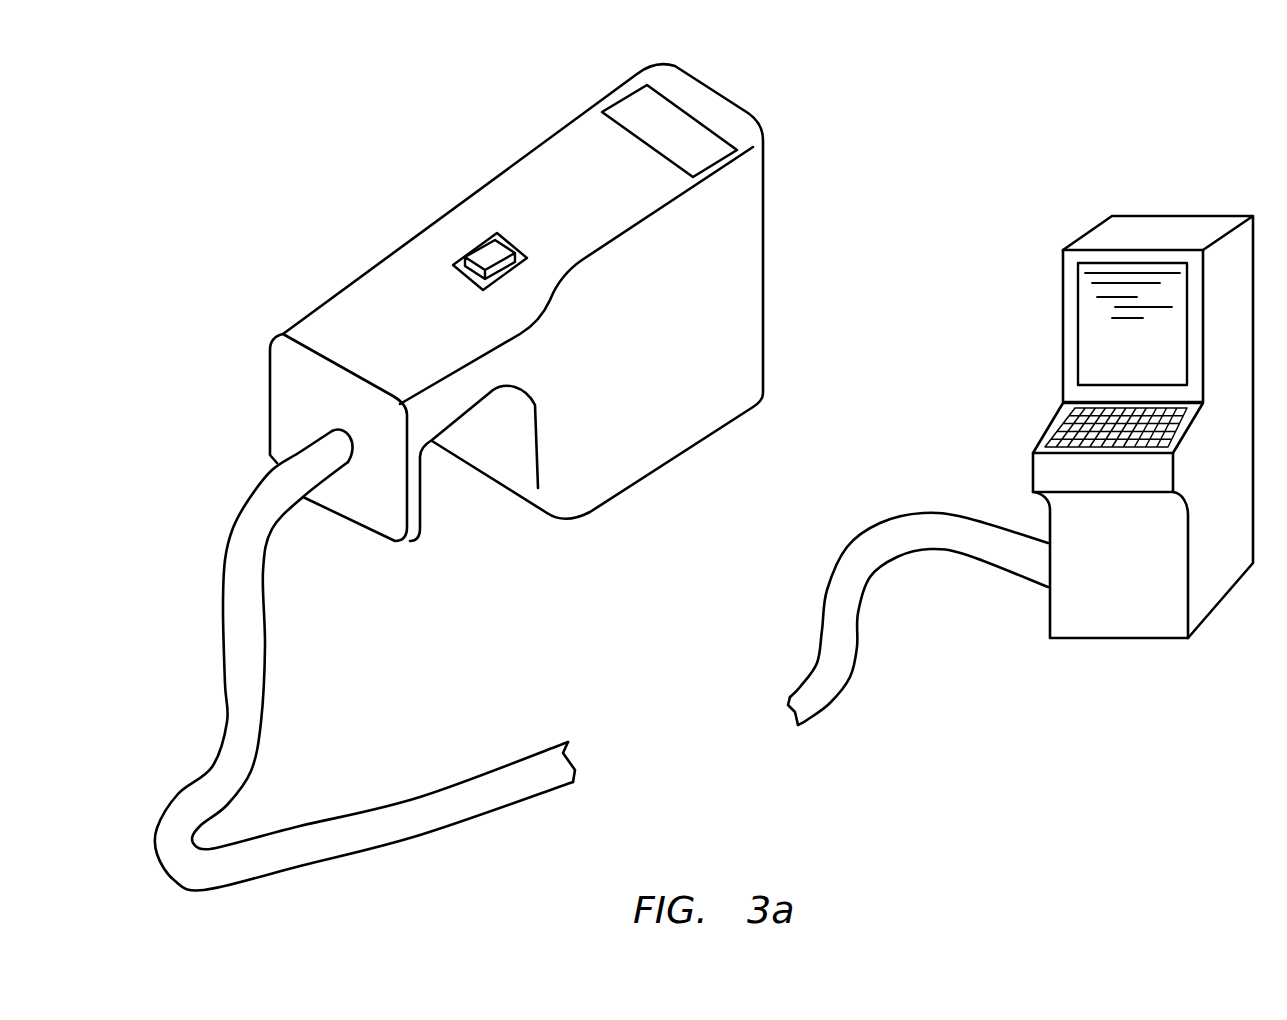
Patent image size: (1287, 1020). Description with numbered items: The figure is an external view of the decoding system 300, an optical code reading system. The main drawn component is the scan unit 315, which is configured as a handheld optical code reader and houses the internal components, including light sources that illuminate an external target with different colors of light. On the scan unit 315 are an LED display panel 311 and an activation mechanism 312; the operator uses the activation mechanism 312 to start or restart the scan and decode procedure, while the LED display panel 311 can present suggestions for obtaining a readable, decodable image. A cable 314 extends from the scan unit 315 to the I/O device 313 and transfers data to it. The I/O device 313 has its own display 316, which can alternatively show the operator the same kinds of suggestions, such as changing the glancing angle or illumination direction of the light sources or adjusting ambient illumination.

The decoding system 300 is at (514, 43).
The LED display panel 311 is at (692, 143).
The activation mechanism 312 is at (478, 256).
The I/O device 313 is at (1062, 358).
The cable 314 is at (253, 654).
The scan unit 315 is at (750, 292).
The display 316 is at (1088, 288).